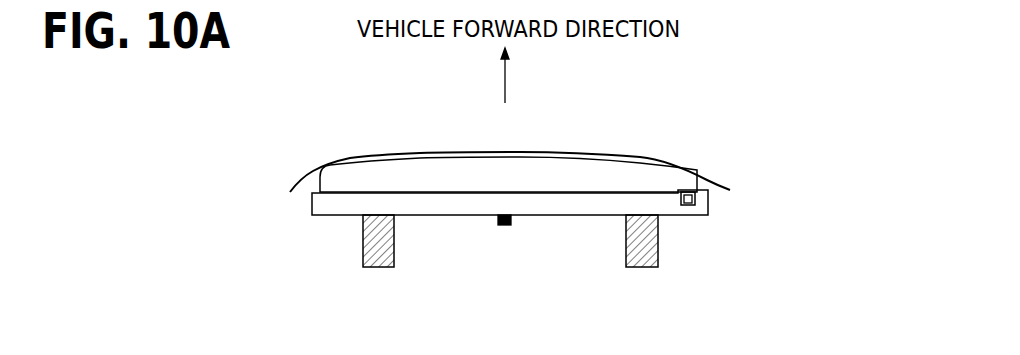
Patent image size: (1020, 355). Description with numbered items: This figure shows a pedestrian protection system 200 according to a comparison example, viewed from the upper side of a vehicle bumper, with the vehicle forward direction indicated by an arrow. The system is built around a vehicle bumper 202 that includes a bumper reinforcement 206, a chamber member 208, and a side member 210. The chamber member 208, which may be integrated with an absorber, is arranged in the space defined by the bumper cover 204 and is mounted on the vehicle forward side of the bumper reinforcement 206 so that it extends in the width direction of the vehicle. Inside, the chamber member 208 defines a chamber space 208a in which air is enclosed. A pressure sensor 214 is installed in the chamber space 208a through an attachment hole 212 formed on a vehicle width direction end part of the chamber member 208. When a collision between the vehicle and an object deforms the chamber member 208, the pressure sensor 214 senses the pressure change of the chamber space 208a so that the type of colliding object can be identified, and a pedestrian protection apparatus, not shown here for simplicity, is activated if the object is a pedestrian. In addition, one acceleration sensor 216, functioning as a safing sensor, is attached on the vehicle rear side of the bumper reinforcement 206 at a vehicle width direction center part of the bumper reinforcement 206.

The pedestrian protection system 200 is at (821, 90).
The vehicle bumper 202 is at (367, 142).
The bumper cover 204 is at (458, 153).
The bumper reinforcement 206 is at (662, 200).
The chamber member 208 is at (352, 172).
The chamber space 208a is at (608, 170).
The side member 210 is at (377, 252).
The attachment hole 212 is at (686, 192).
The pressure sensor 214 is at (691, 195).
The acceleration sensor 216 is at (505, 227).